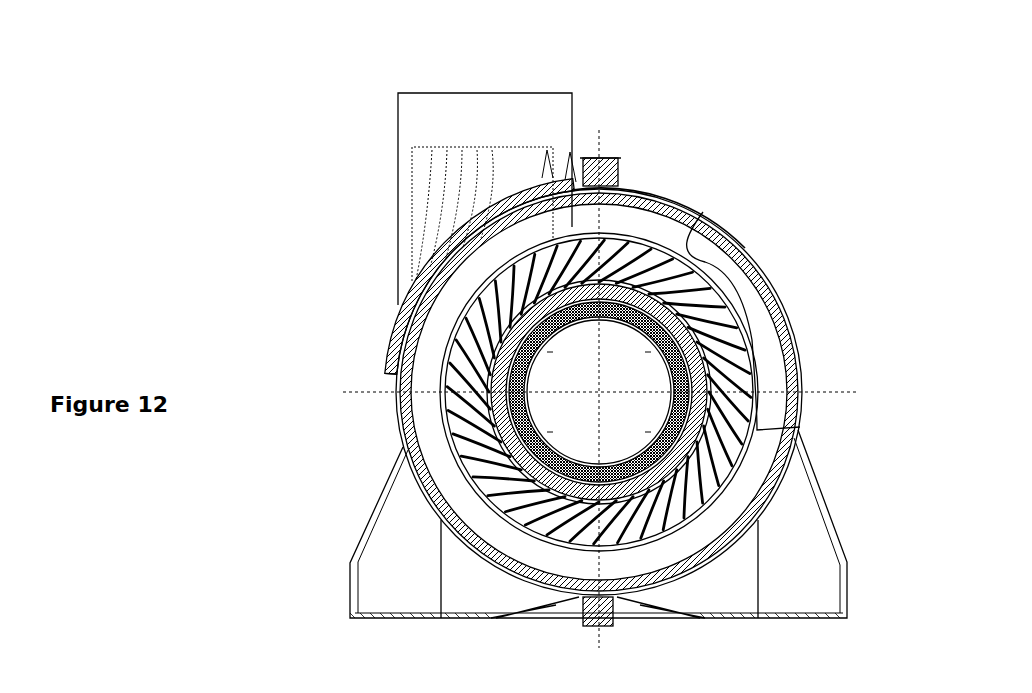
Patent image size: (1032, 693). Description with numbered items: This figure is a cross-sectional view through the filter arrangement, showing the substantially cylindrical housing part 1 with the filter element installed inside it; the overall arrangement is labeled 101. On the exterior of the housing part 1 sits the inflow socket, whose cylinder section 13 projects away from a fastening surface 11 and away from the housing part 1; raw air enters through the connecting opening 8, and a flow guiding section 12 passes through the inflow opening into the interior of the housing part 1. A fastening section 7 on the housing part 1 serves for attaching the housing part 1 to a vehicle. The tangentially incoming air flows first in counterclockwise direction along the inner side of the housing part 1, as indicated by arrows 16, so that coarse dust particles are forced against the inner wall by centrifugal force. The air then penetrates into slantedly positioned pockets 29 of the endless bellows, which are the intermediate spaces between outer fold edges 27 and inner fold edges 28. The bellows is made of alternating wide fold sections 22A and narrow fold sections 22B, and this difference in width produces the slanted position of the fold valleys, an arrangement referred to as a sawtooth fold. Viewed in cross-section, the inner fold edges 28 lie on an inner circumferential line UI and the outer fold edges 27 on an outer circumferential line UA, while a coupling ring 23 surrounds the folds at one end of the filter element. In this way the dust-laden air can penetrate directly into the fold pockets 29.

The housing part 1 is at (793, 316).
The fastening section 7 is at (617, 158).
The connecting opening 8 is at (502, 90).
The fastening surface 11 is at (398, 325).
The flow guiding section 12 is at (568, 226).
The cylinder section 13 is at (398, 147).
The arrows 16 is at (447, 326).
The wide fold section 22A is at (703, 214).
The narrow fold section 22B is at (745, 248).
The coupling ring 23 is at (757, 432).
The outer fold edge 27 is at (737, 475).
The inner fold edge 28 is at (667, 418).
The pockets 29 is at (477, 467).
The outer circumferential line UA is at (740, 345).
The inner circumferential line UI is at (657, 348).
The fan unit 101 is at (214, 131).